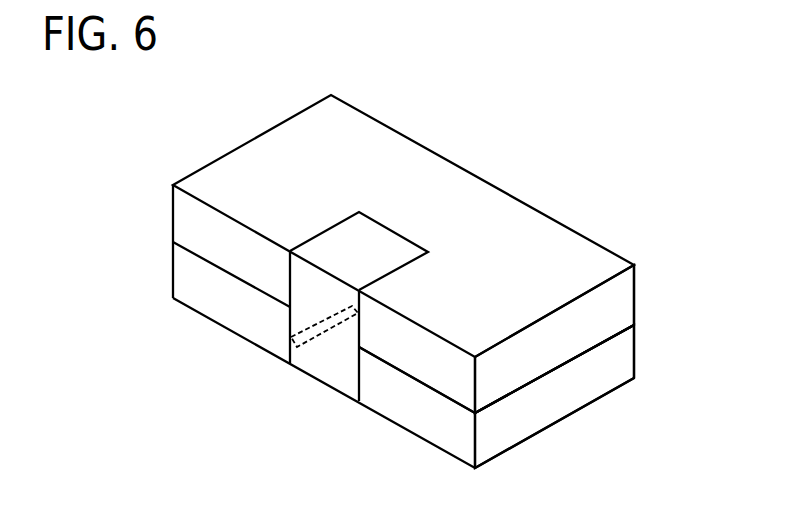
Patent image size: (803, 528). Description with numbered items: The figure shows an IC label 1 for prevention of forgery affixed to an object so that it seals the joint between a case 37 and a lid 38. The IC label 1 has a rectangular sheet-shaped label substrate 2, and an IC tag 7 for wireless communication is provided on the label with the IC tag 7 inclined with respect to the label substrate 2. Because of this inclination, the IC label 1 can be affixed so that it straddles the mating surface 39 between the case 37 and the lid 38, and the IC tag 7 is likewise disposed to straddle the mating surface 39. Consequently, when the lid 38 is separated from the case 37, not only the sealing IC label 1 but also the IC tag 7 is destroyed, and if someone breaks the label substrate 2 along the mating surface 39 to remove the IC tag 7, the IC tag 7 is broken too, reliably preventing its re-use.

The IC label 1 is at (238, 355).
The label substrate 2 is at (382, 232).
The IC tag 7 is at (323, 333).
The case 37 is at (613, 373).
The lid 38 is at (612, 312).
The mating surface 39 is at (513, 392).